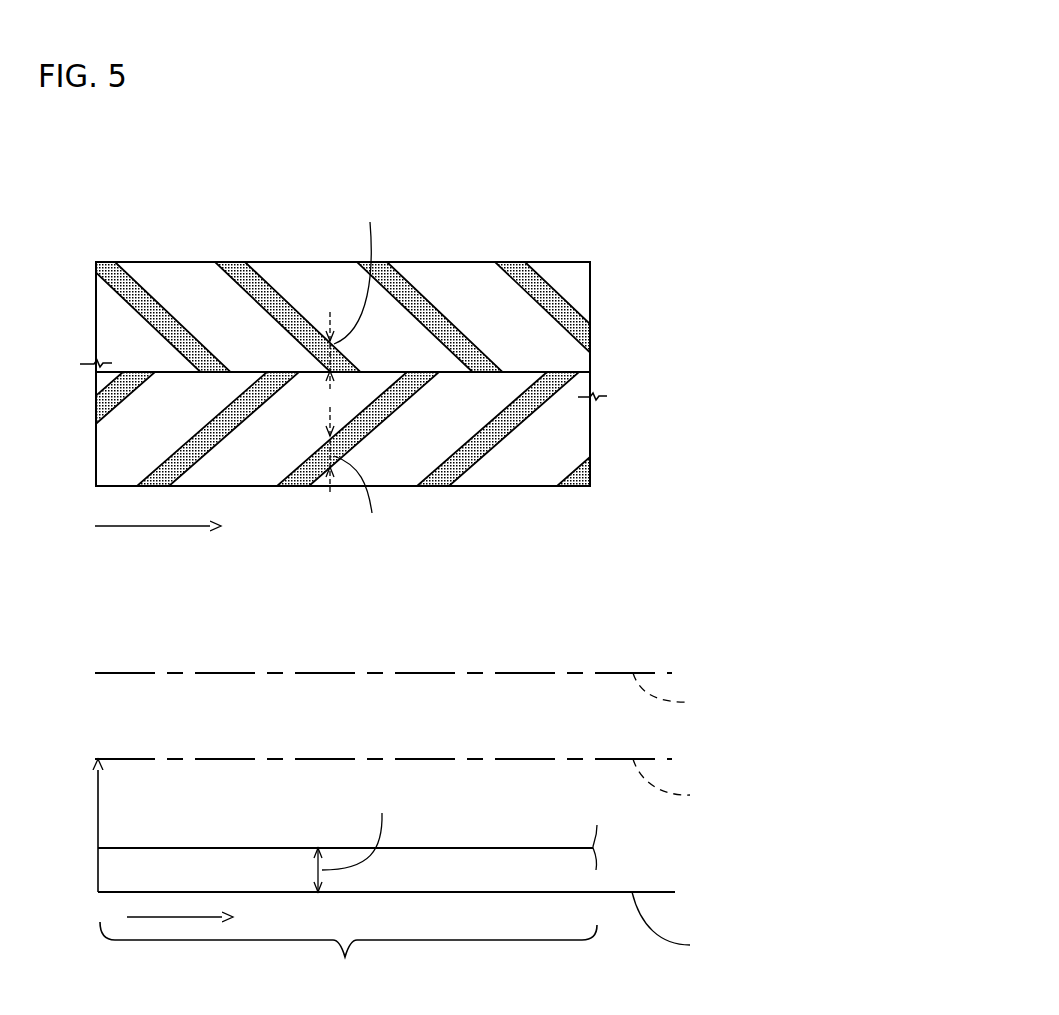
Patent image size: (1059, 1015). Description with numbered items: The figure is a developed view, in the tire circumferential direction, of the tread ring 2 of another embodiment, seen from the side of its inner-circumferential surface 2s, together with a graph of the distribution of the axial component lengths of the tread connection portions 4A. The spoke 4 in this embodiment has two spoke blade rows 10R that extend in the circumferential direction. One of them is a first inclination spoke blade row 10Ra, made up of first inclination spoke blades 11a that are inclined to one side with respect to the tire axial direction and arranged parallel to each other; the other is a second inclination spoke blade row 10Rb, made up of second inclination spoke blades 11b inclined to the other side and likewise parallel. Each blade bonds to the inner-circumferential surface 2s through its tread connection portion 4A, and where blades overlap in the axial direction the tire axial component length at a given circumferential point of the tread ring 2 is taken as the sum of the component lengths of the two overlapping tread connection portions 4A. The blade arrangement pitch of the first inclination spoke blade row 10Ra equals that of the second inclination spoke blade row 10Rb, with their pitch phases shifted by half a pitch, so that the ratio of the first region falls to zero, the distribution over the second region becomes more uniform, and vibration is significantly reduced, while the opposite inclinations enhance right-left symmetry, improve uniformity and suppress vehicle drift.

The tread ring 2 is at (593, 226).
The inner-circumferential surface 2s is at (552, 280).
The spoke 4 is at (706, 321).
The tread connection portion 4A is at (359, 316).
The spoke blade rows 10R is at (434, 378).
The second inclination spoke blade row 10Rb is at (609, 320).
The first inclination spoke blade row 10Ra is at (608, 431).
The second inclination spoke blades 11b is at (150, 320).
The first inclination spoke blades 11a is at (120, 373).